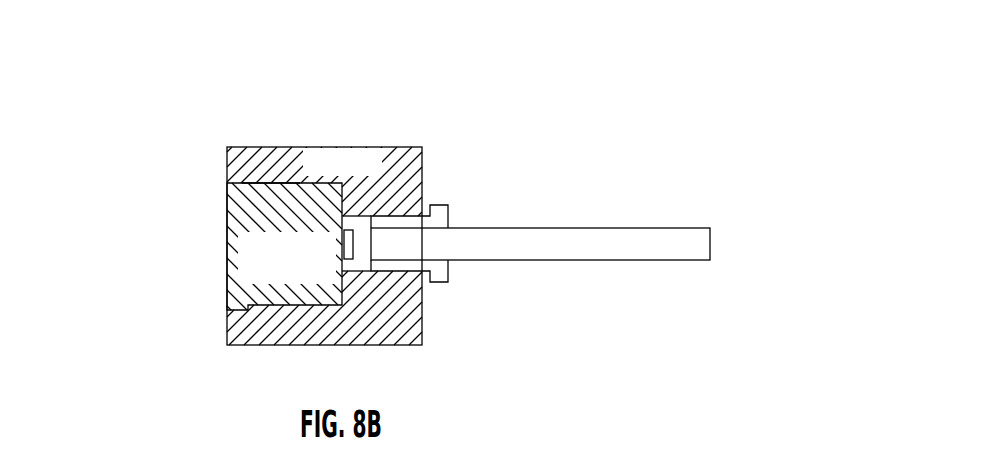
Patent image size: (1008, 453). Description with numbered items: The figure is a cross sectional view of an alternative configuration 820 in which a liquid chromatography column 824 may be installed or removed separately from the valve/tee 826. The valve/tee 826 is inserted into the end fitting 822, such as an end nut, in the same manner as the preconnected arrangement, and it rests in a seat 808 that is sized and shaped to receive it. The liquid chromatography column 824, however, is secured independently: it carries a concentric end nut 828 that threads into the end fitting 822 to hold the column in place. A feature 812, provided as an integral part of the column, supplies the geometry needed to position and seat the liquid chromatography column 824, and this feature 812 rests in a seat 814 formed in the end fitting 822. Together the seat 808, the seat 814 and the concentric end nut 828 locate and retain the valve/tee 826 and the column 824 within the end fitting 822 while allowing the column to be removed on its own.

The alternative configuration 820 is at (474, 190).
The end fitting 822 is at (375, 147).
The valve/tee 826 is at (284, 246).
The seat 808 is at (242, 183).
The feature 812 is at (355, 265).
The seat 814 is at (372, 217).
The concentric end nut 828 is at (455, 211).
The liquid chromatography column 824 is at (613, 256).